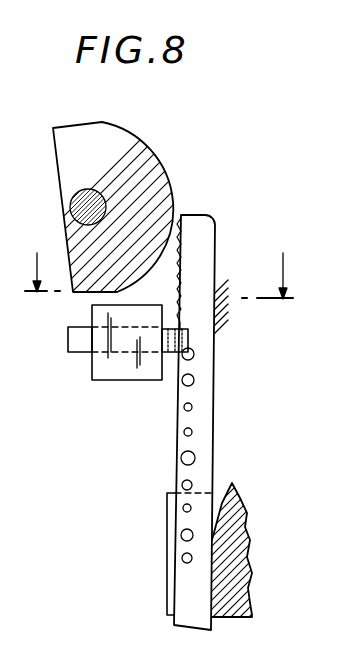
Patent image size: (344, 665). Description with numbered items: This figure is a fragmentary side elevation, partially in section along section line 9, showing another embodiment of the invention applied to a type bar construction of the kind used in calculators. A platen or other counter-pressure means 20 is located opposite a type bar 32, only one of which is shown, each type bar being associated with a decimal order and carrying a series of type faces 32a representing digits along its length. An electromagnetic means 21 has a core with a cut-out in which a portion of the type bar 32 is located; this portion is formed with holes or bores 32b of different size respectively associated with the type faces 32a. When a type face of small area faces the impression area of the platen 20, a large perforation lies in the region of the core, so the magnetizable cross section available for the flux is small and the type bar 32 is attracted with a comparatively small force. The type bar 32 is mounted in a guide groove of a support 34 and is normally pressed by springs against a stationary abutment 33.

The section line 9- 9 is at (159, 267).
The platen 20 is at (127, 140).
The electromagnetic means 21 is at (141, 316).
The type bar 32 is at (213, 216).
The type faces 32a is at (182, 247).
The holes 32b is at (193, 382).
The stationary abutment 33 is at (217, 317).
The support 34 is at (237, 537).